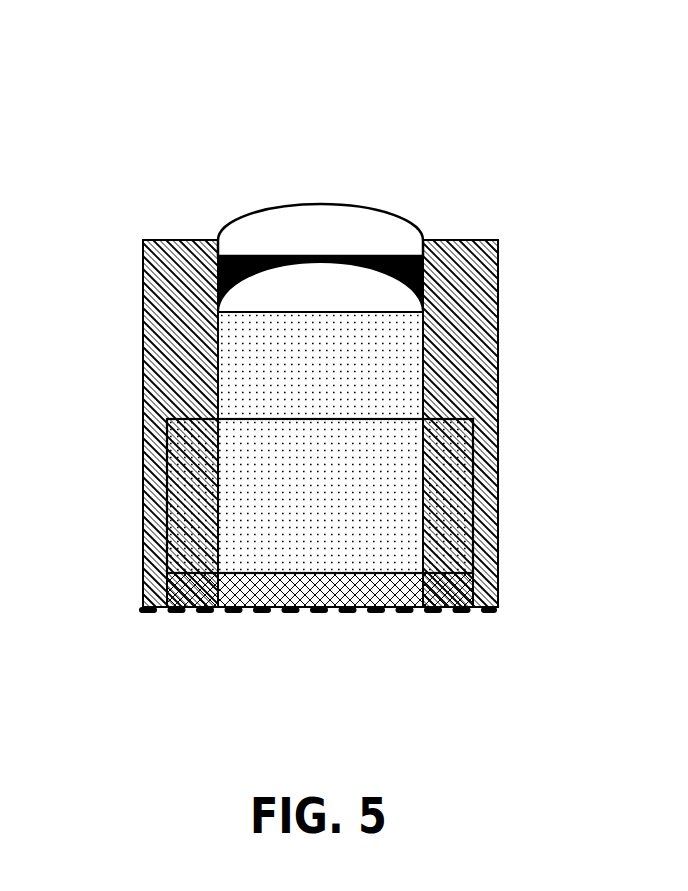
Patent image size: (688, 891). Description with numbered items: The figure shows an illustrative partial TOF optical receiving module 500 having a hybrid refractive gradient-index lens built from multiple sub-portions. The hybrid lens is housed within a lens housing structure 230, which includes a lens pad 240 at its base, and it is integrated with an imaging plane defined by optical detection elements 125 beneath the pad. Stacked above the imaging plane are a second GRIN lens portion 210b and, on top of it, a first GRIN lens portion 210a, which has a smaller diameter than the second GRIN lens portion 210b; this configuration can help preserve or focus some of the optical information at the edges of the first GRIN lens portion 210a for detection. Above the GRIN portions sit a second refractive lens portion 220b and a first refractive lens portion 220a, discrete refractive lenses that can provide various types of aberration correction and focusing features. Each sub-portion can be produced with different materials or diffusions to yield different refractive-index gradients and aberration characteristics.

The partial TOF optical receiving module 500 is at (147, 91).
The lens housing structure 230 is at (485, 391).
The first refractive lens portion 220a is at (320, 230).
The second refractive lens portion 220b is at (320, 284).
The first GRIN lens portion 210a is at (320, 365).
The second GRIN lens portion 210b is at (320, 496).
The lens pad 240 is at (457, 582).
The optical detection elements 125 is at (168, 612).